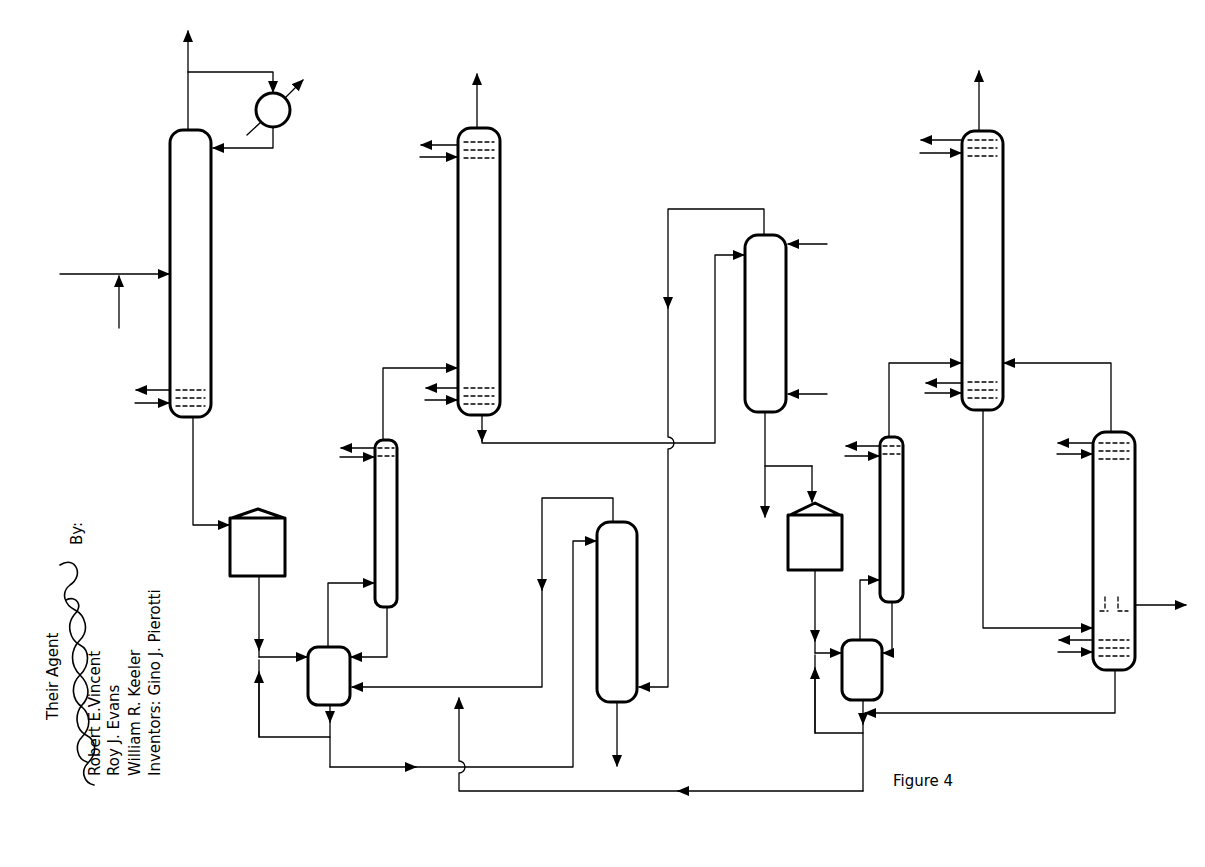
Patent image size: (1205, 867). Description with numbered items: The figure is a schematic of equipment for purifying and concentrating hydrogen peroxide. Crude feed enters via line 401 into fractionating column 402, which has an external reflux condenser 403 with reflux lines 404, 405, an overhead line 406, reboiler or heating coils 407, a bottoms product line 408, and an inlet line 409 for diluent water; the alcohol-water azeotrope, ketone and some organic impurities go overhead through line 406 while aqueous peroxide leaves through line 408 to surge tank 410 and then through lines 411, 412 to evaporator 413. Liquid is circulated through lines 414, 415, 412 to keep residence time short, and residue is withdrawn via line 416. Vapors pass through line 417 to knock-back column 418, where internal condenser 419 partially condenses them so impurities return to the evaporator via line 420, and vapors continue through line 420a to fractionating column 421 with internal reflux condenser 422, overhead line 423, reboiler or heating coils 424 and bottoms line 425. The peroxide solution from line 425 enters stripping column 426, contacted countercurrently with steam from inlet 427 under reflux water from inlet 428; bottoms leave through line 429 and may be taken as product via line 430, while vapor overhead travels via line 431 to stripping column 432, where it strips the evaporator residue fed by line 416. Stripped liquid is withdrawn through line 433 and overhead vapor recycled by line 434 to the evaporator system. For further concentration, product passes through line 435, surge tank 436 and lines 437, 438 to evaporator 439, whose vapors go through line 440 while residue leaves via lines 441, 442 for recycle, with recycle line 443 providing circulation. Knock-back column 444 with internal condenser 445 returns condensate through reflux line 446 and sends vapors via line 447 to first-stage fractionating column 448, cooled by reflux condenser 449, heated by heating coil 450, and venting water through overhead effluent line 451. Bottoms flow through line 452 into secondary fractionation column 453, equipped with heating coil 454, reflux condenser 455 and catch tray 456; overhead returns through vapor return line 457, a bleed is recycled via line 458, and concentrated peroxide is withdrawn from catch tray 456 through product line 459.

The feed line 401 is at (106, 273).
The fractionating column 402 is at (170, 157).
The reflux condenser 403 is at (290, 117).
The reflux line 404 is at (212, 70).
The reflux line 405 is at (273, 142).
The overhead line 406 is at (186, 52).
The reboiler or heating coils 407 is at (165, 388).
The bottoms product line 408 is at (190, 442).
The inlet line 409 is at (117, 313).
The surge tank 410 is at (255, 511).
The line 411 is at (257, 602).
The line 412 is at (277, 657).
The evaporator 413 is at (352, 672).
The line 414 is at (330, 718).
The line 415 is at (297, 738).
The line 416 is at (357, 750).
The line 417 is at (352, 582).
The knock-back column 418 is at (397, 525).
The internal condenser 419 is at (358, 457).
The line 420 is at (387, 640).
The line 420a is at (445, 368).
The fractionating column 421 is at (458, 252).
The internal reflux condenser 422 is at (455, 137).
The overhead line 423 is at (480, 98).
The reboiler or heating coils 424 is at (450, 400).
The bottoms line 425 is at (518, 443).
The stripping column 426 is at (786, 312).
The inlet 427 is at (812, 384).
The inlet 428 is at (820, 232).
The line 429 is at (770, 455).
The line 430 is at (763, 492).
The line 431 is at (715, 209).
The stripping column 432 is at (618, 525).
The line 433 is at (620, 733).
The line 434 is at (542, 563).
The line 435 is at (812, 495).
The surge tank 436 is at (788, 555).
The line 437 is at (812, 610).
The line 438 is at (822, 648).
The evaporator 439 is at (883, 668).
The line 440 is at (859, 590).
The line 441 is at (865, 710).
The line 442 is at (722, 790).
The recycle line 443 is at (812, 705).
The knock-back column 444 is at (903, 523).
The internal condenser 445 is at (845, 445).
The reflux line 446 is at (892, 630).
The line 447 is at (935, 362).
The first-stage fractionating column 448 is at (1005, 253).
The reflux condenser 449 is at (950, 138).
The heating coil 450 is at (945, 395).
The overhead effluent line 451 is at (982, 98).
The line 452 is at (985, 528).
The secondary fractionation column 453 is at (1135, 525).
The heating coil 454 is at (1052, 633).
The reflux condenser 455 is at (1085, 462).
The catch tray 456 is at (1130, 600).
The vapor return line 457 is at (1045, 360).
The line 458 is at (1118, 708).
The product line 459 is at (1150, 615).